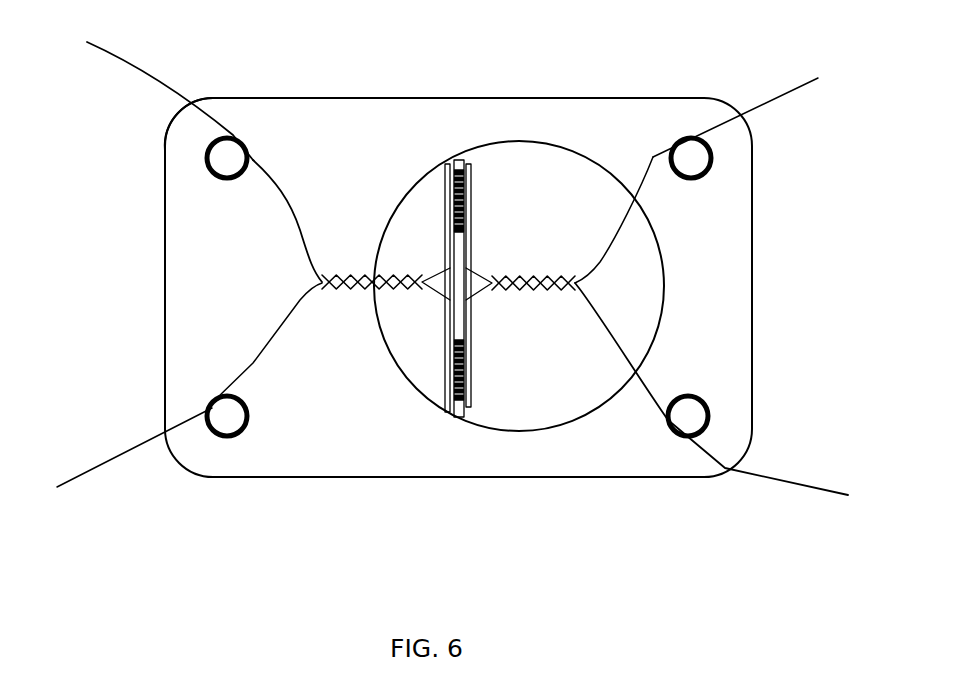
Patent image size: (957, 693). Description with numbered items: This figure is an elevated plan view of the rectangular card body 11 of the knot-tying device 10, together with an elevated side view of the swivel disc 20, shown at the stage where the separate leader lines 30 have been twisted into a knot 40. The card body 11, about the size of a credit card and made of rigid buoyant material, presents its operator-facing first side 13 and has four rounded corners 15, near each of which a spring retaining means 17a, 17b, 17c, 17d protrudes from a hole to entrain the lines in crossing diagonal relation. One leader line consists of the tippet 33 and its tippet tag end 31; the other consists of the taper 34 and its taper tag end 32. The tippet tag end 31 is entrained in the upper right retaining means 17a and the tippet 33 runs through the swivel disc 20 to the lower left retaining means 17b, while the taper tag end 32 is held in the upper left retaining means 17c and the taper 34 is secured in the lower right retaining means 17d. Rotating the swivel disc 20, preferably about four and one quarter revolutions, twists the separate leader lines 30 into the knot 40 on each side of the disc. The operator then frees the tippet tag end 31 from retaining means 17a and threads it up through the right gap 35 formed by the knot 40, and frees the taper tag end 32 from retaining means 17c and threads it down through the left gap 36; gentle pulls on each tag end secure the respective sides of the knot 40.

The knot-tying device 10 is at (496, 92).
The rectangular card body 11 is at (628, 98).
The first side 13 is at (249, 295).
The rounded corners 15 is at (178, 124).
The retaining means 17a is at (672, 173).
The retaining means 17b is at (232, 437).
The retaining means 17c is at (208, 176).
The retaining means 17d is at (680, 393).
The swivel disc 20 is at (519, 286).
The separate leader lines 30 is at (287, 203).
The tippet tag end 31 is at (768, 100).
The taper tag end 32 is at (123, 52).
The tippet 33 is at (122, 453).
The taper 34 is at (795, 482).
The right gap 35 is at (480, 273).
The left gap 36 is at (438, 263).
The knot 40 is at (367, 293).